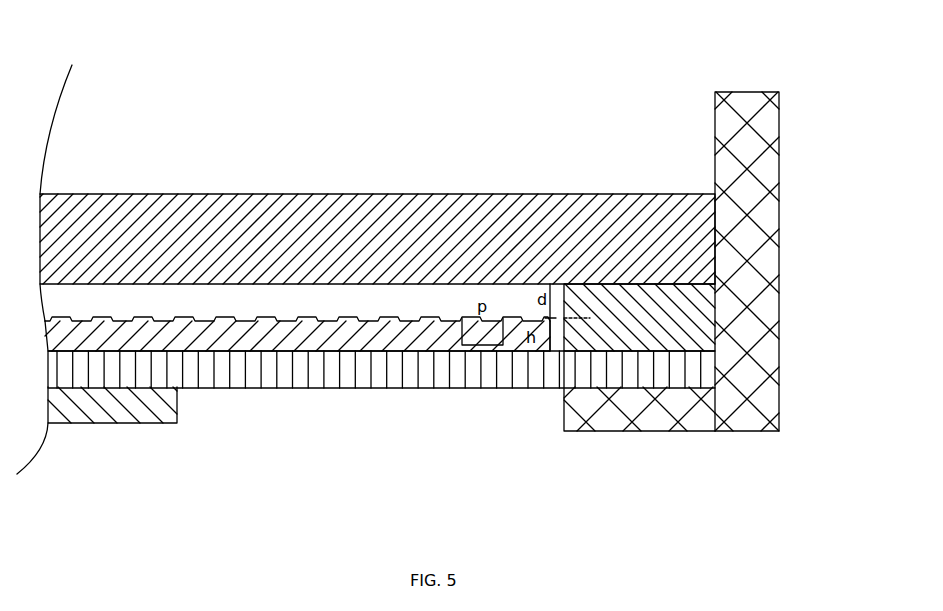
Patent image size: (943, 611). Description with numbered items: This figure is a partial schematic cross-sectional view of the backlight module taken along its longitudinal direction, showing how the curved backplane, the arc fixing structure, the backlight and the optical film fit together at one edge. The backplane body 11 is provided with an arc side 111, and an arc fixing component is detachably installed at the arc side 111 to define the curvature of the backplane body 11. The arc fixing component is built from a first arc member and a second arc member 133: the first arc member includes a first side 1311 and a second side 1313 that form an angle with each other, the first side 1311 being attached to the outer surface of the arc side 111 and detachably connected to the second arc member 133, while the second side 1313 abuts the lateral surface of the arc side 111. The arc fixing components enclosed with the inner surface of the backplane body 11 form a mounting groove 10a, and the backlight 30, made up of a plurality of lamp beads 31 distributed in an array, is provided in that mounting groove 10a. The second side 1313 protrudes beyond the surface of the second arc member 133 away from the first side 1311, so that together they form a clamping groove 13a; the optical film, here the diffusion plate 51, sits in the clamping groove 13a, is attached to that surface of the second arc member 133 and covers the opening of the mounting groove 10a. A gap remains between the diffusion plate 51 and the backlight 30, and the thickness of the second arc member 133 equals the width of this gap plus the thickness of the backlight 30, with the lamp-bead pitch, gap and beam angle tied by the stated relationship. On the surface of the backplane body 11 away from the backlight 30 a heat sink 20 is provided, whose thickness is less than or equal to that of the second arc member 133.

The diffusion plate 51 is at (648, 225).
The lamp beads 31 is at (378, 316).
The backlight 30 is at (297, 307).
The mounting groove 10a is at (247, 306).
The backplane body 11 is at (381, 412).
The arc side 111 is at (603, 378).
The heat sink 20 is at (157, 417).
The second arc member 133 is at (683, 315).
The clamping groove 13a is at (706, 267).
The second side 1313 is at (743, 350).
The first side 1311 is at (677, 415).